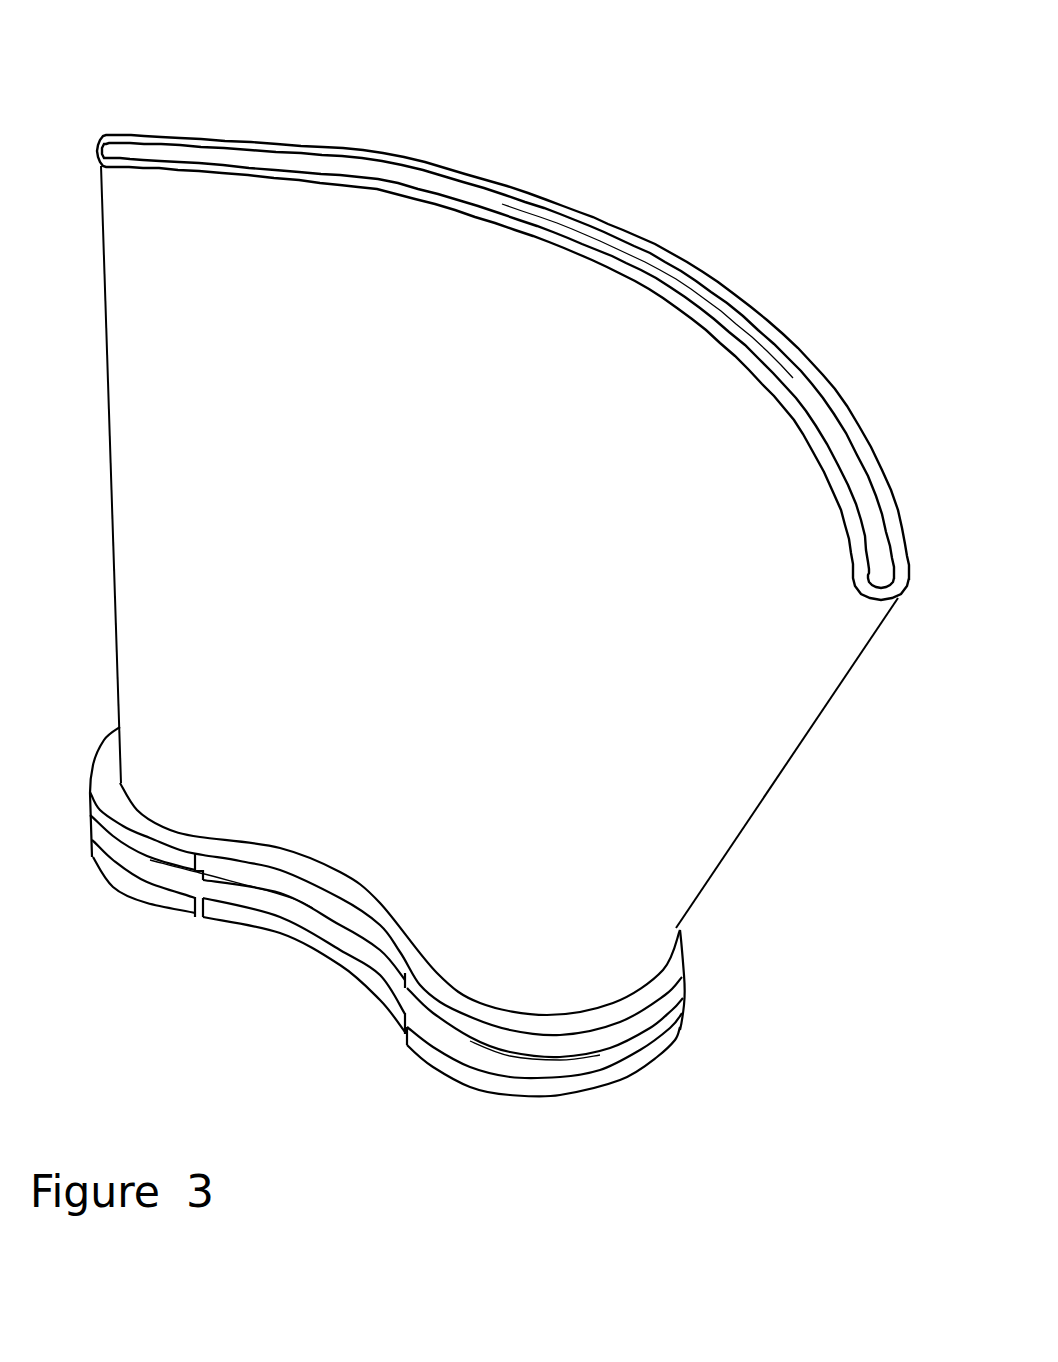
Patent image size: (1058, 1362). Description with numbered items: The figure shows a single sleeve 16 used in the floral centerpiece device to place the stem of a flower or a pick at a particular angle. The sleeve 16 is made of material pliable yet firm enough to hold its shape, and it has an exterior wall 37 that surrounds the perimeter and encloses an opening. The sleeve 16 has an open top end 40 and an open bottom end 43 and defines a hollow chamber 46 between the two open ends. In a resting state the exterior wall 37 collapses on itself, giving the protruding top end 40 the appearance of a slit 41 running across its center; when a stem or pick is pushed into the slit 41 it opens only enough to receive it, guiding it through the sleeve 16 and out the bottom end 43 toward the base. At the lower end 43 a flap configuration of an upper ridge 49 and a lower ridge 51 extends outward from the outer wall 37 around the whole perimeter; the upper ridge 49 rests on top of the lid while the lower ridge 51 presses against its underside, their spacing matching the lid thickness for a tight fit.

The sleeve 16 is at (236, 384).
The exterior wall 37 is at (787, 677).
The open top end 40 is at (233, 137).
The slit 41 is at (720, 312).
The hollow chamber 46 is at (492, 203).
The upper ridge 49 is at (670, 952).
The lower ridge 51 is at (652, 1032).
The open bottom end 43 is at (613, 1087).